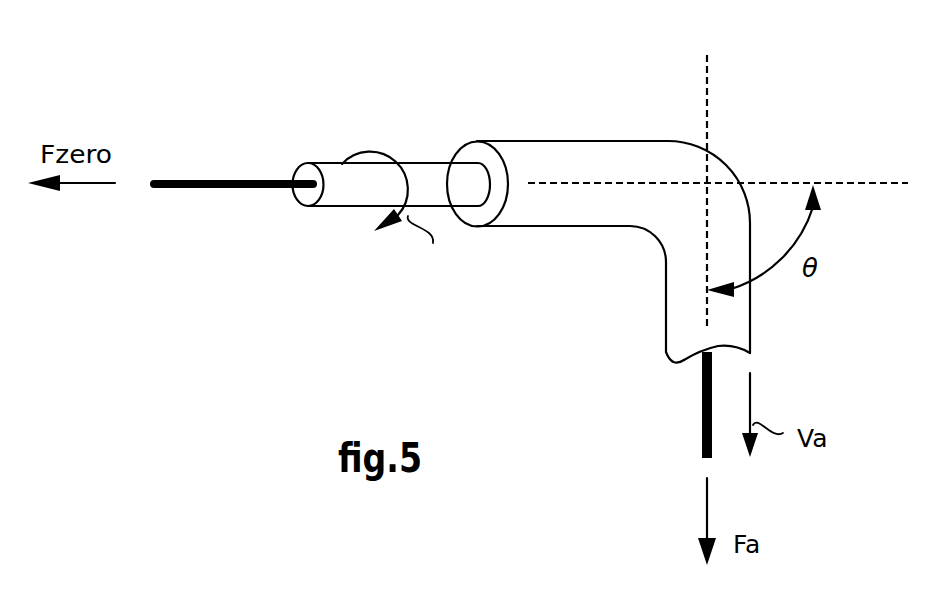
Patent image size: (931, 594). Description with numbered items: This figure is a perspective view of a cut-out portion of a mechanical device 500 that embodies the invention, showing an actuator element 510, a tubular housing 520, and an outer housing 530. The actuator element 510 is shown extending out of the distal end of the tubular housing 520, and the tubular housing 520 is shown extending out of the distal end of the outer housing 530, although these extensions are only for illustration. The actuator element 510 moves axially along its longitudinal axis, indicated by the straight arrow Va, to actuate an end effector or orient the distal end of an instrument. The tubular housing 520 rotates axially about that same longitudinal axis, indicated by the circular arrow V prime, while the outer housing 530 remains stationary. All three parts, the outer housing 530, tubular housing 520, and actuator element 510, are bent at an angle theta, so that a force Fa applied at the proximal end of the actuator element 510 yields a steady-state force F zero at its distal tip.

The rotary tool assembly 500 is at (300, 75).
The actuator element 510 is at (213, 178).
The tubular housing 520 is at (426, 163).
The outer housing 530 is at (561, 141).